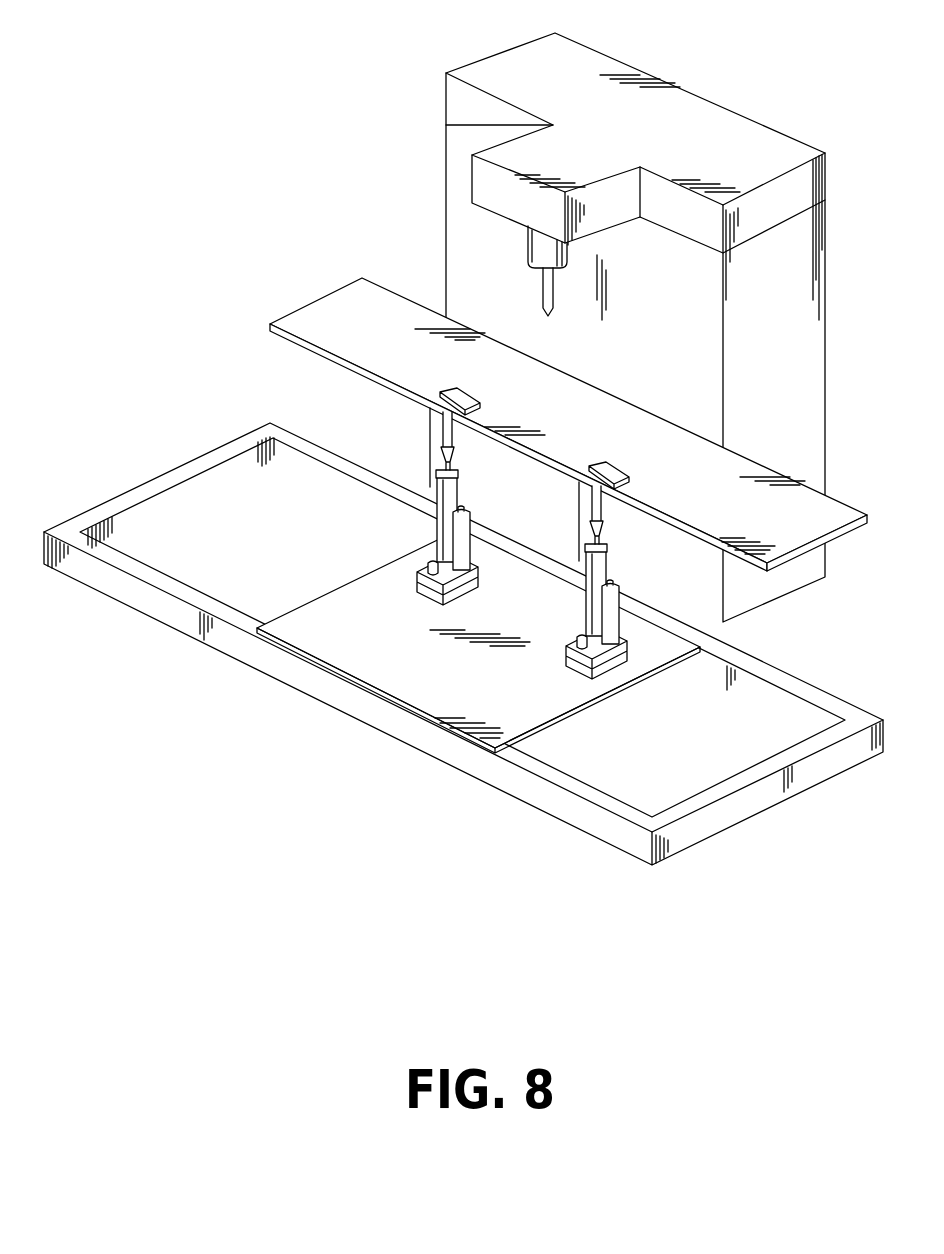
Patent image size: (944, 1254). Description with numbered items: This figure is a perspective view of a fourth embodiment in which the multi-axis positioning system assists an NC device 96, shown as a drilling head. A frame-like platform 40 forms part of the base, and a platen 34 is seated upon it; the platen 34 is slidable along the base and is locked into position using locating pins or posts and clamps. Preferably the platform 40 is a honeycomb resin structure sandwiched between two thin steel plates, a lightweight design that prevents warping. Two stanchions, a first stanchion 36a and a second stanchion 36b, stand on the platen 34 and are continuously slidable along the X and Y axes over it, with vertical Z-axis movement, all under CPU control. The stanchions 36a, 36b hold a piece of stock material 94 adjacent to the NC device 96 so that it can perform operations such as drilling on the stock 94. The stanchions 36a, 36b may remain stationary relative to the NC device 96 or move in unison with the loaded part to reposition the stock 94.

The NC device 96 is at (663, 128).
The piece of stock material 94 is at (358, 312).
The platform 40 is at (552, 726).
The platen 34 is at (413, 660).
The first stanchion 36a is at (420, 607).
The second stanchion 36b is at (578, 680).